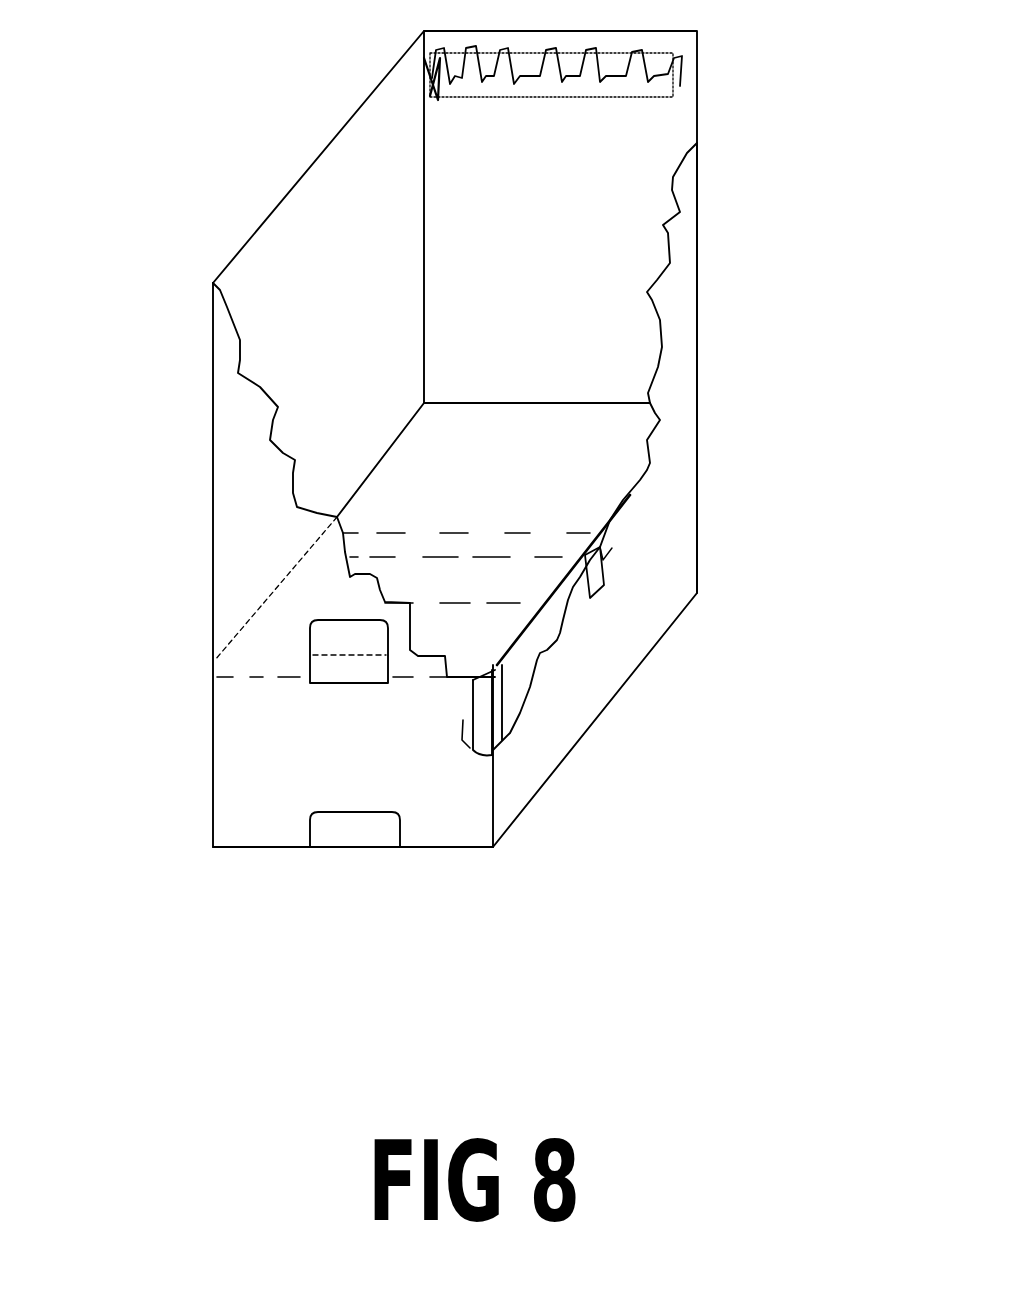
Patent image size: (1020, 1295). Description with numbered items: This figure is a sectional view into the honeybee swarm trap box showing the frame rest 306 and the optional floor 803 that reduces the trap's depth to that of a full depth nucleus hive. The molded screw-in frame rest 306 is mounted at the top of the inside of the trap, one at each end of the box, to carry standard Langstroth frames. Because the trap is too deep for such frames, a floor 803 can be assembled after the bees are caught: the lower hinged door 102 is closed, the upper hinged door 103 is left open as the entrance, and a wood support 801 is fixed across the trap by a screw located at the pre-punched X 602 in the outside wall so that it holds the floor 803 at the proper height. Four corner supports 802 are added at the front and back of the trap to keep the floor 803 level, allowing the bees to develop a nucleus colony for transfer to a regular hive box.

The lower hinged door 102 is at (363, 850).
The upper hinged door 103 is at (300, 653).
The frame rest 306 is at (622, 62).
The pre-punched "X" 602 is at (600, 590).
The wood support 801 is at (600, 595).
The corner supports 802 is at (493, 708).
The optional floor 803 is at (586, 465).